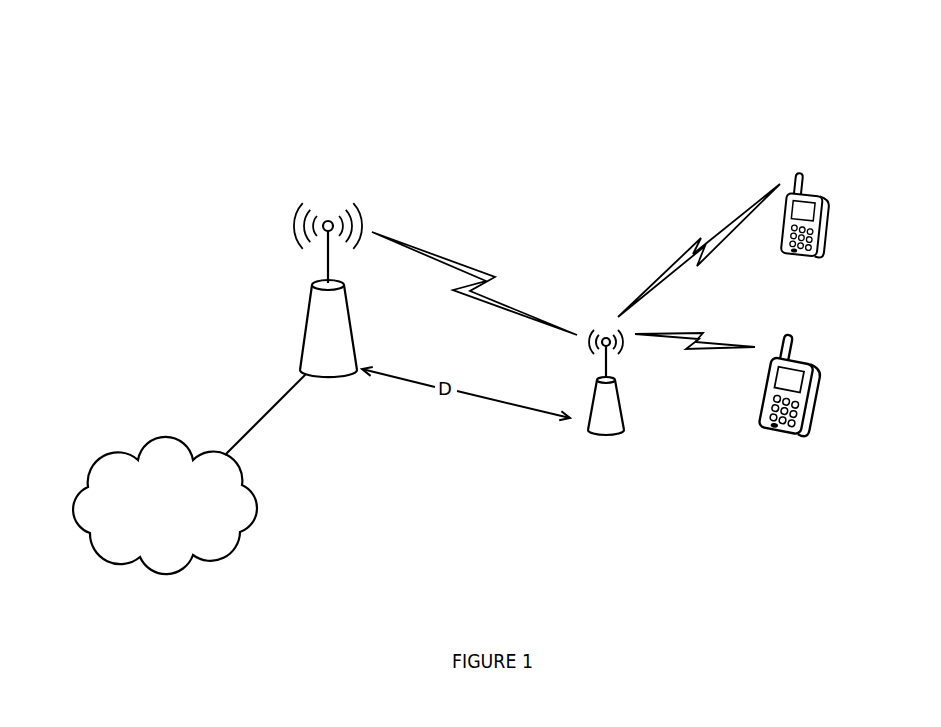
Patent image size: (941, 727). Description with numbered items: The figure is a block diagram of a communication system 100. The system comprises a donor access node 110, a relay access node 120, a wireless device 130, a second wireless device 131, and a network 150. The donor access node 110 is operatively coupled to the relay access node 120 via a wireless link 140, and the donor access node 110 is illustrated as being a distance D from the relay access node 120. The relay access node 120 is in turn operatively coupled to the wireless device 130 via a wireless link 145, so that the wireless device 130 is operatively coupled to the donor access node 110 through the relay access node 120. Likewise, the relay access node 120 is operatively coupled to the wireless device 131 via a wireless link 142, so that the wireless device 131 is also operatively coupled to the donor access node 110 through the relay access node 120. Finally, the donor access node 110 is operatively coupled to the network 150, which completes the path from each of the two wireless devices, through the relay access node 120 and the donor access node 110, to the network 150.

The communication system 100 is at (840, 49).
The donor access node 110 is at (303, 357).
The relay access node 120 is at (615, 435).
The wireless device 130 is at (817, 436).
The wireless device 131 is at (828, 252).
The wireless link 140 is at (482, 270).
The wireless link 142 is at (702, 262).
The wireless link 145 is at (690, 332).
The network 150 is at (189, 474).